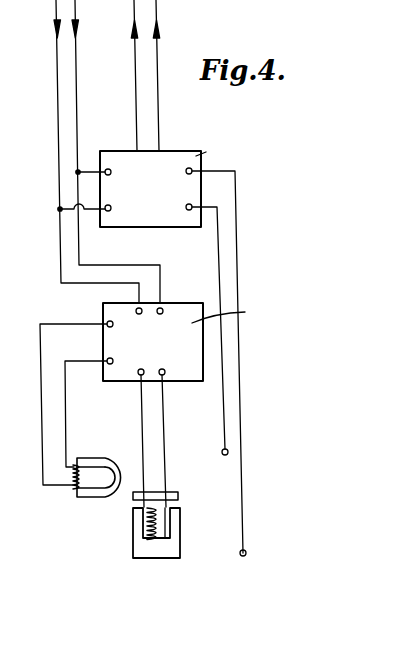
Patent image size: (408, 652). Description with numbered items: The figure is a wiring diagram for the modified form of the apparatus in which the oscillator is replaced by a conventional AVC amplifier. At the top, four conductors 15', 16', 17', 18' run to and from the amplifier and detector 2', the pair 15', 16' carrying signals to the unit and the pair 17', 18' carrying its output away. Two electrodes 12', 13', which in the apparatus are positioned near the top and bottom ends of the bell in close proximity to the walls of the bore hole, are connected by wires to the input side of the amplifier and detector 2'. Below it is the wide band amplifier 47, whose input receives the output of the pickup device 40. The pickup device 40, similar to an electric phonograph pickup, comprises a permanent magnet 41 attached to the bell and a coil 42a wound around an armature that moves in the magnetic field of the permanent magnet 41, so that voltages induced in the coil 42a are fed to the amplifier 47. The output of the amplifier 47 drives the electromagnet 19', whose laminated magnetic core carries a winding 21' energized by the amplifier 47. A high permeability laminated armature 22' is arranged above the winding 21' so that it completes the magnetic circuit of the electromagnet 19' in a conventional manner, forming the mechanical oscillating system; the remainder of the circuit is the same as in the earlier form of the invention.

The conductor 15' is at (78, 151).
The conductor 16' is at (116, 151).
The conductor 17' is at (119, 75).
The conductor 18' is at (172, 75).
The amplifier and detector 2' is at (172, 337).
The AVC amplifier 47 is at (181, 376).
The coil 42a is at (75, 463).
The permanent magnet 41 is at (125, 449).
The pickup device 40 is at (86, 469).
The electrode 12' is at (204, 445).
The electrode 13' is at (264, 551).
The armature 22' is at (171, 483).
The winding 21' is at (182, 516).
The electromagnet 19' is at (147, 516).